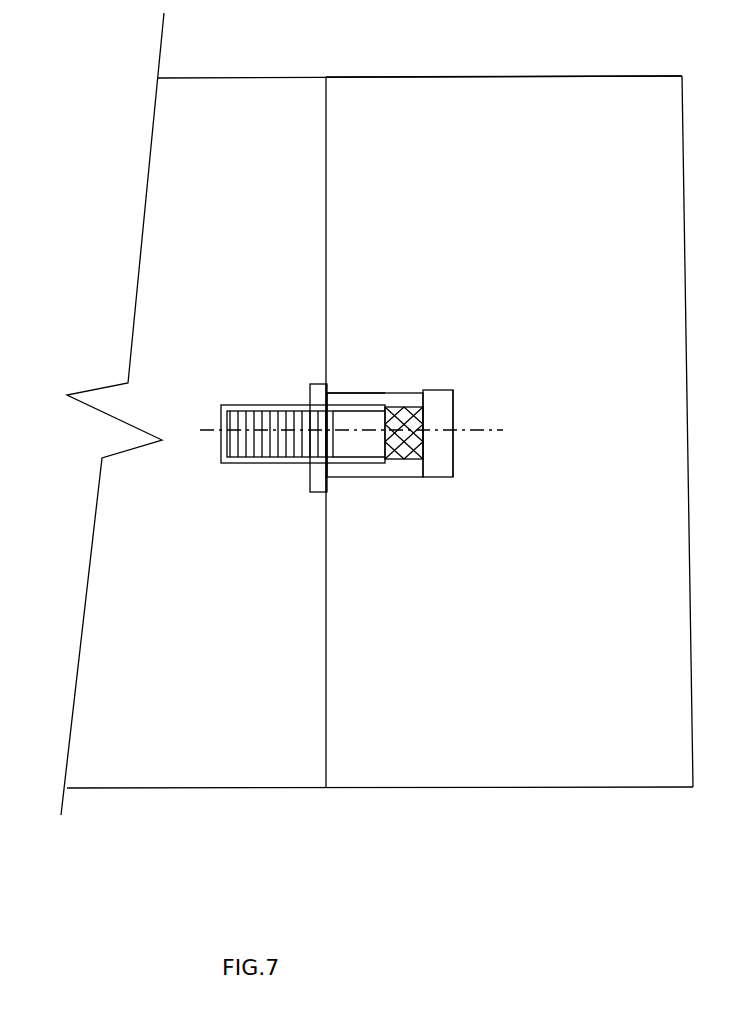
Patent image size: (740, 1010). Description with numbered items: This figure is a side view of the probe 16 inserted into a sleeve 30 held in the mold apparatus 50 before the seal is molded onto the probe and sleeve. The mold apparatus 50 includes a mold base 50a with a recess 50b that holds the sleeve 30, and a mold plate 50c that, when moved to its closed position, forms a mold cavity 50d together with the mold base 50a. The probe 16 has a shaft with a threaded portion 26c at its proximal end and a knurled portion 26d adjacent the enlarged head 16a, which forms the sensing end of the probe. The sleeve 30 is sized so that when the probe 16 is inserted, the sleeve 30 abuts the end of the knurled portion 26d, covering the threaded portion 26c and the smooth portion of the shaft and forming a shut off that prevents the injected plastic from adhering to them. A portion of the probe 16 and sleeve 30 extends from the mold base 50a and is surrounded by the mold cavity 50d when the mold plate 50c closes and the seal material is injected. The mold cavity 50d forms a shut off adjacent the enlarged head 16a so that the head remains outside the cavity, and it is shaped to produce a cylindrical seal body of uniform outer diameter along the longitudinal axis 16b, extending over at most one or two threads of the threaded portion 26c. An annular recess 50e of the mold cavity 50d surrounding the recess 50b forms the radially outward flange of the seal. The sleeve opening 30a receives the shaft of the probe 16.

The mold apparatus 50 is at (163, 287).
The mold base 50a is at (235, 215).
The recess 50b is at (282, 403).
The mold plate 50c is at (380, 118).
The mold cavity 50d is at (352, 396).
The annular recess 50e is at (318, 480).
The probe 16 is at (440, 418).
The enlarged head 16a is at (438, 448).
The longitudinal axis 16b is at (477, 430).
The threaded portion 26c is at (265, 445).
The knurled portion 26d is at (400, 463).
The sleeve 30 is at (378, 458).
The sleeve opening 30a is at (382, 408).